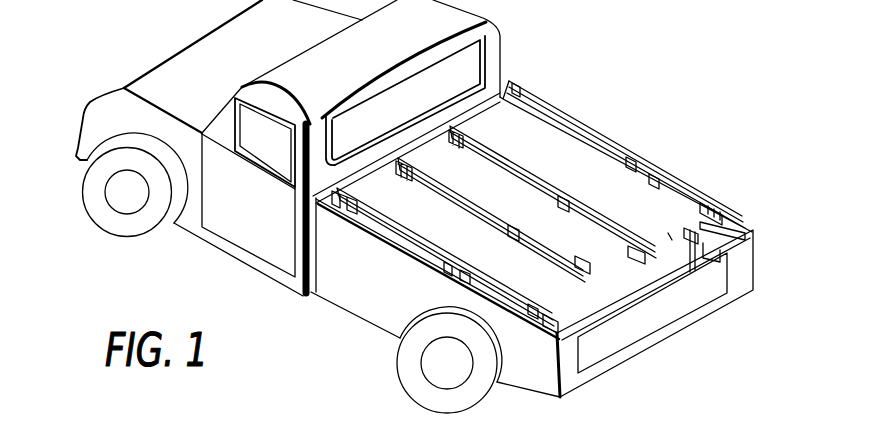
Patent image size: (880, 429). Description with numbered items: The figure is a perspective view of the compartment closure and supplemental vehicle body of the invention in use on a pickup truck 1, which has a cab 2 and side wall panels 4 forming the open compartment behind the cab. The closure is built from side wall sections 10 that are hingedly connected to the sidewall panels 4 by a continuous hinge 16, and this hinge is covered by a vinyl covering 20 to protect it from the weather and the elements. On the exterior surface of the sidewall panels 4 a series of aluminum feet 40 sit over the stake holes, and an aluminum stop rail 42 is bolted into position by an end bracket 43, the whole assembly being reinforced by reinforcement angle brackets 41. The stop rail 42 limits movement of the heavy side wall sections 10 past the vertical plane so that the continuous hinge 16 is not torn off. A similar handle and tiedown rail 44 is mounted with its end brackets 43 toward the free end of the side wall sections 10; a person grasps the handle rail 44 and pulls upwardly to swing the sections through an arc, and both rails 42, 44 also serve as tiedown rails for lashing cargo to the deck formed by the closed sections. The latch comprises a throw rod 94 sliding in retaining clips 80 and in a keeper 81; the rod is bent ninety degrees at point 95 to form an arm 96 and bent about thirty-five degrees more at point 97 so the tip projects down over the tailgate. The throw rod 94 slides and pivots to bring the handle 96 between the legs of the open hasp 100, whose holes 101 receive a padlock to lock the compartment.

The pickup truck 1 is at (65, 146).
The cab 2 is at (414, 43).
The side wall panels 4 is at (373, 285).
The side wall section 10 is at (590, 186).
The continuous hinge 16 is at (598, 136).
The vinyl covering 20 is at (580, 125).
The aluminum feet 40 is at (447, 272).
The reinforcement angle brackets 41 is at (355, 218).
The stop rail 42 is at (403, 233).
The end bracket 43 is at (547, 323).
The handle and tiedown rail 44 is at (507, 158).
The retaining clips 80 is at (635, 256).
The keeper 81 is at (580, 262).
The throw rod 94 is at (668, 233).
The point 95 is at (707, 203).
The arm 96 is at (740, 229).
The point 97 is at (715, 256).
The open hasp 100 is at (723, 213).
The holes 101 is at (692, 244).